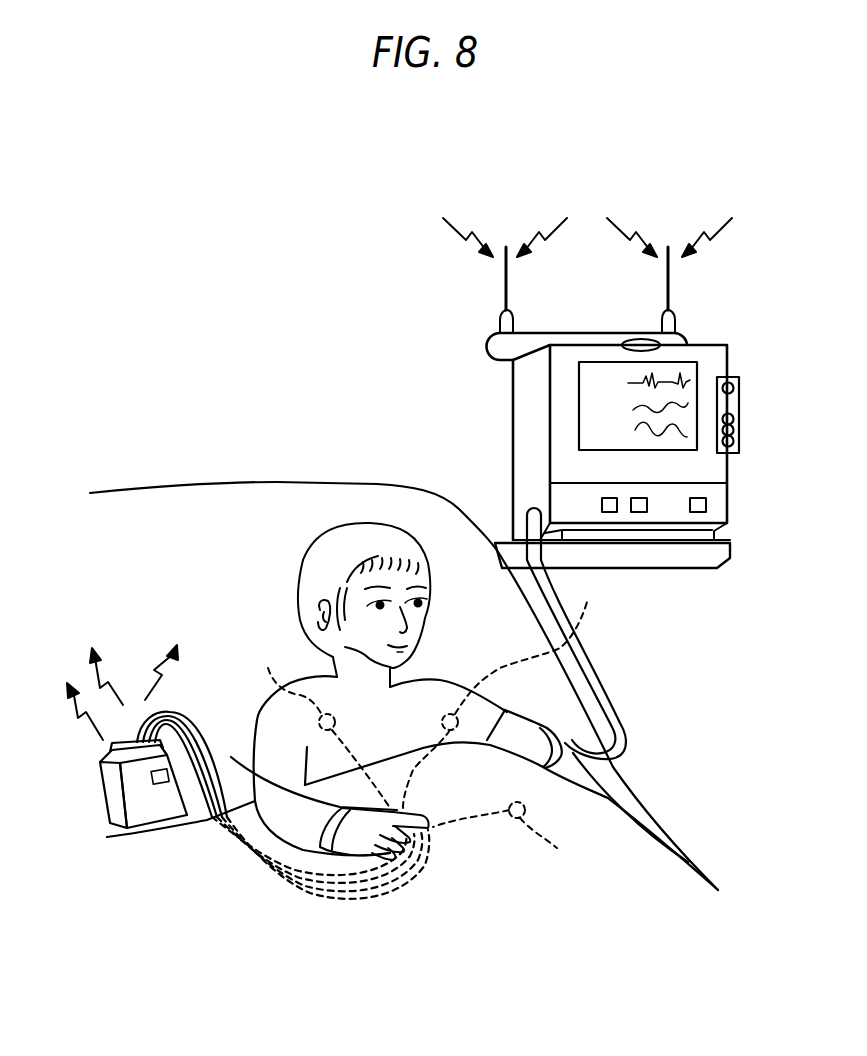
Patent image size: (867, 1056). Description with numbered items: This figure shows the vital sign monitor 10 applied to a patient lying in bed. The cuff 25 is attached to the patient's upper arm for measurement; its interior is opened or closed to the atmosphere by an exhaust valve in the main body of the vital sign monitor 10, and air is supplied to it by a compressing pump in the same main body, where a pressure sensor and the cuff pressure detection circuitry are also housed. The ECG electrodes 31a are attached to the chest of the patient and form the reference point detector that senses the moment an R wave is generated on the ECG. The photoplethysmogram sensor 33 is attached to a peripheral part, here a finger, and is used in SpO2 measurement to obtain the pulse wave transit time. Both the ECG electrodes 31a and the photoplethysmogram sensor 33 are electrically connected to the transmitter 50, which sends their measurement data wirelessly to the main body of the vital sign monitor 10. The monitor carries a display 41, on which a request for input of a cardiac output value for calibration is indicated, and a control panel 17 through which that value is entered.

The vital sign monitor 10 is at (582, 200).
The control panel 17 is at (735, 403).
The display 41 is at (590, 433).
The cuff 25 is at (547, 728).
The ECG electrodes 31a is at (427, 728).
The photoplethysmogram sensor 33 is at (427, 830).
The transmitter 50 is at (115, 800).